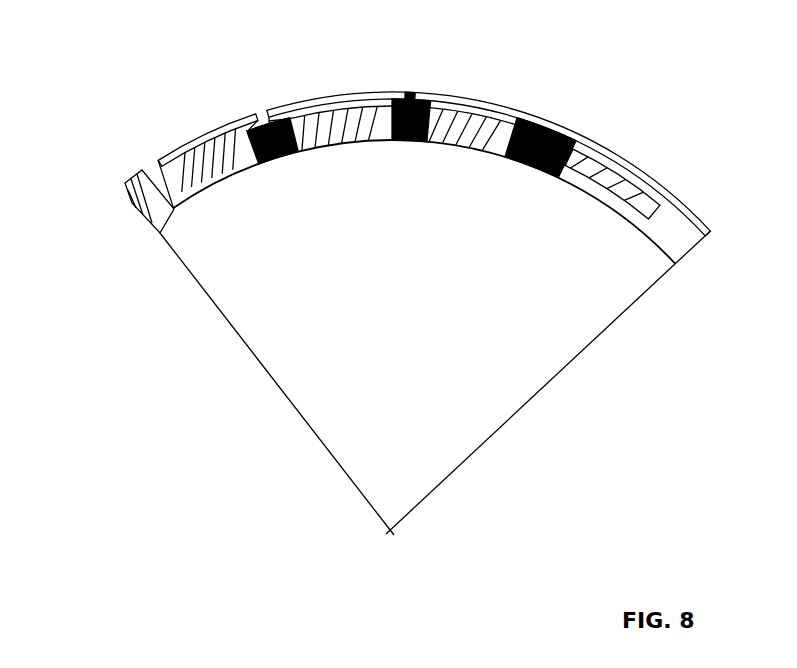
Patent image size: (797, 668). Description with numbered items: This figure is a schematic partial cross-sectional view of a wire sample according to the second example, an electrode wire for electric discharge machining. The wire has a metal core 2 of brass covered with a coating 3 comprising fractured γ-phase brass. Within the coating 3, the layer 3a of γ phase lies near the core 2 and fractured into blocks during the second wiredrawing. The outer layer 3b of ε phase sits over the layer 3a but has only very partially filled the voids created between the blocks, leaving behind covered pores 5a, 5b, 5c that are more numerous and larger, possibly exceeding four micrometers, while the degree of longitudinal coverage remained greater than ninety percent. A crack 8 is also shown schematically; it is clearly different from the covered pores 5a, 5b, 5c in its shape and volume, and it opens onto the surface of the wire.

The metal core 2 is at (360, 250).
The coating 3 is at (132, 205).
The layer of γ phase 3a is at (613, 177).
The outer layer of ε phase 3b is at (688, 210).
The covered pore 5a is at (264, 104).
The covered pore 5b is at (412, 92).
The covered pore 5c is at (560, 135).
The crack 8 is at (191, 158).